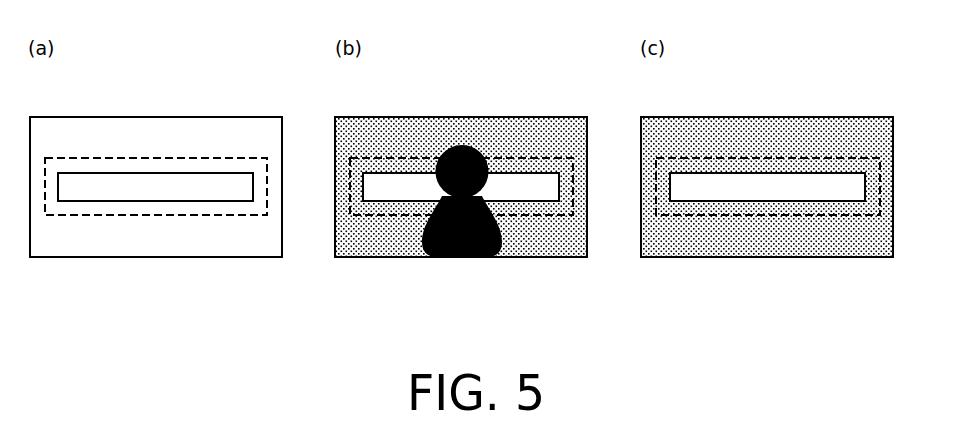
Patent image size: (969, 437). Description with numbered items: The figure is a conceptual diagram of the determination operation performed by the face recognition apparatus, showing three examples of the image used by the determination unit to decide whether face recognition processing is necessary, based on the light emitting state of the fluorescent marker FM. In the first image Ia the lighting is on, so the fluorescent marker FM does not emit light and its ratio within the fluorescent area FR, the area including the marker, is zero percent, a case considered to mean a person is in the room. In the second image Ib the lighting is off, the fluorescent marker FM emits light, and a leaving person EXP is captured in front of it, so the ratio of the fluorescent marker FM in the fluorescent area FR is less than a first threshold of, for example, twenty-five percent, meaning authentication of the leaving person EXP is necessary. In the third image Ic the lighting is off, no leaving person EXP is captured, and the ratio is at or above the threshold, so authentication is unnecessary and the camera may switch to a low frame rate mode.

The image Ia is at (105, 117).
The image Ib is at (408, 117).
The image Ic is at (715, 117).
The fluorescent marker FM is at (105, 173).
The fluorescent area FR is at (185, 215).
The leaving person EXP is at (458, 145).